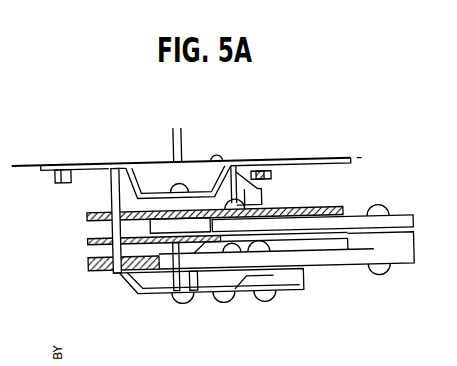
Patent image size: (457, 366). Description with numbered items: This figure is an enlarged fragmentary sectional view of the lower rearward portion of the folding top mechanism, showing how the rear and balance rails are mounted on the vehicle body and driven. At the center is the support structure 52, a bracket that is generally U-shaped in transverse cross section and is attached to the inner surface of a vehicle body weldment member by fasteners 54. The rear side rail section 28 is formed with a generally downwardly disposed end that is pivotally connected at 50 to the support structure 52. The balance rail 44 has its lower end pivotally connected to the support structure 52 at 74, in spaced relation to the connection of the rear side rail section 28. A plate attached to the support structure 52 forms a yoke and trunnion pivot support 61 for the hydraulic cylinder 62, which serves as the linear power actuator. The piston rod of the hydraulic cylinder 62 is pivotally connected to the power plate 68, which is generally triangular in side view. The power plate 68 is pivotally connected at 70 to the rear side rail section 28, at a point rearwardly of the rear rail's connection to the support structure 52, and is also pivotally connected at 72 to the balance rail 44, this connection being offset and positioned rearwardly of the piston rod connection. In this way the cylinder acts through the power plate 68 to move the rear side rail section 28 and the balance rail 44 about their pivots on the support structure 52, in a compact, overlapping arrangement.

The rear side rail section 28 is at (343, 210).
The balance rail 44 is at (317, 262).
The pivotal connection 50 is at (182, 304).
The support structure 52 is at (110, 279).
The fasteners 54 is at (66, 180).
The yoke and trunnion pivot support 61 is at (227, 304).
The hydraulic cylinder 62 is at (252, 192).
The power plate 68 is at (403, 223).
The pivotal connection 70 is at (235, 188).
The pivotal connection 72 is at (385, 272).
The pivotal connection 74 is at (267, 305).